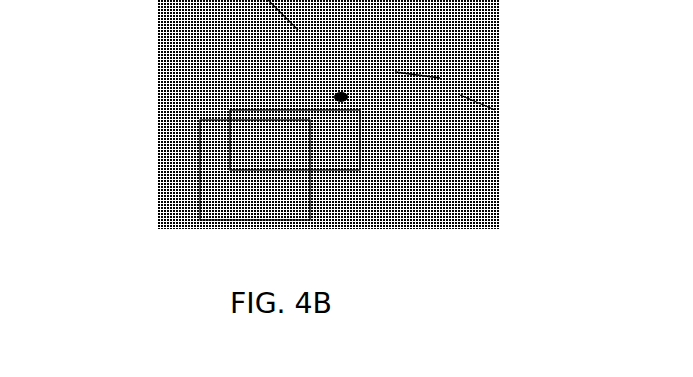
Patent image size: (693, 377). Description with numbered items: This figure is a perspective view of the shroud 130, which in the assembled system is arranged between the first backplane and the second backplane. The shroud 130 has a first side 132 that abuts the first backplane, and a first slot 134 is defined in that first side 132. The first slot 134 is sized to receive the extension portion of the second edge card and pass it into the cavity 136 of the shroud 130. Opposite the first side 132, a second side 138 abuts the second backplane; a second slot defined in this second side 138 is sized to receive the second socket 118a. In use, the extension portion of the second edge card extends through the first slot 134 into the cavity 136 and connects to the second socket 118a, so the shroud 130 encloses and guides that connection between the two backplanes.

The shroud 130 is at (550, 52).
The first side 132 is at (478, 102).
The first slot 134 is at (417, 75).
The cavity 136 is at (357, 92).
The second side 138 is at (200, 206).
The second socket 118a is at (250, 127).